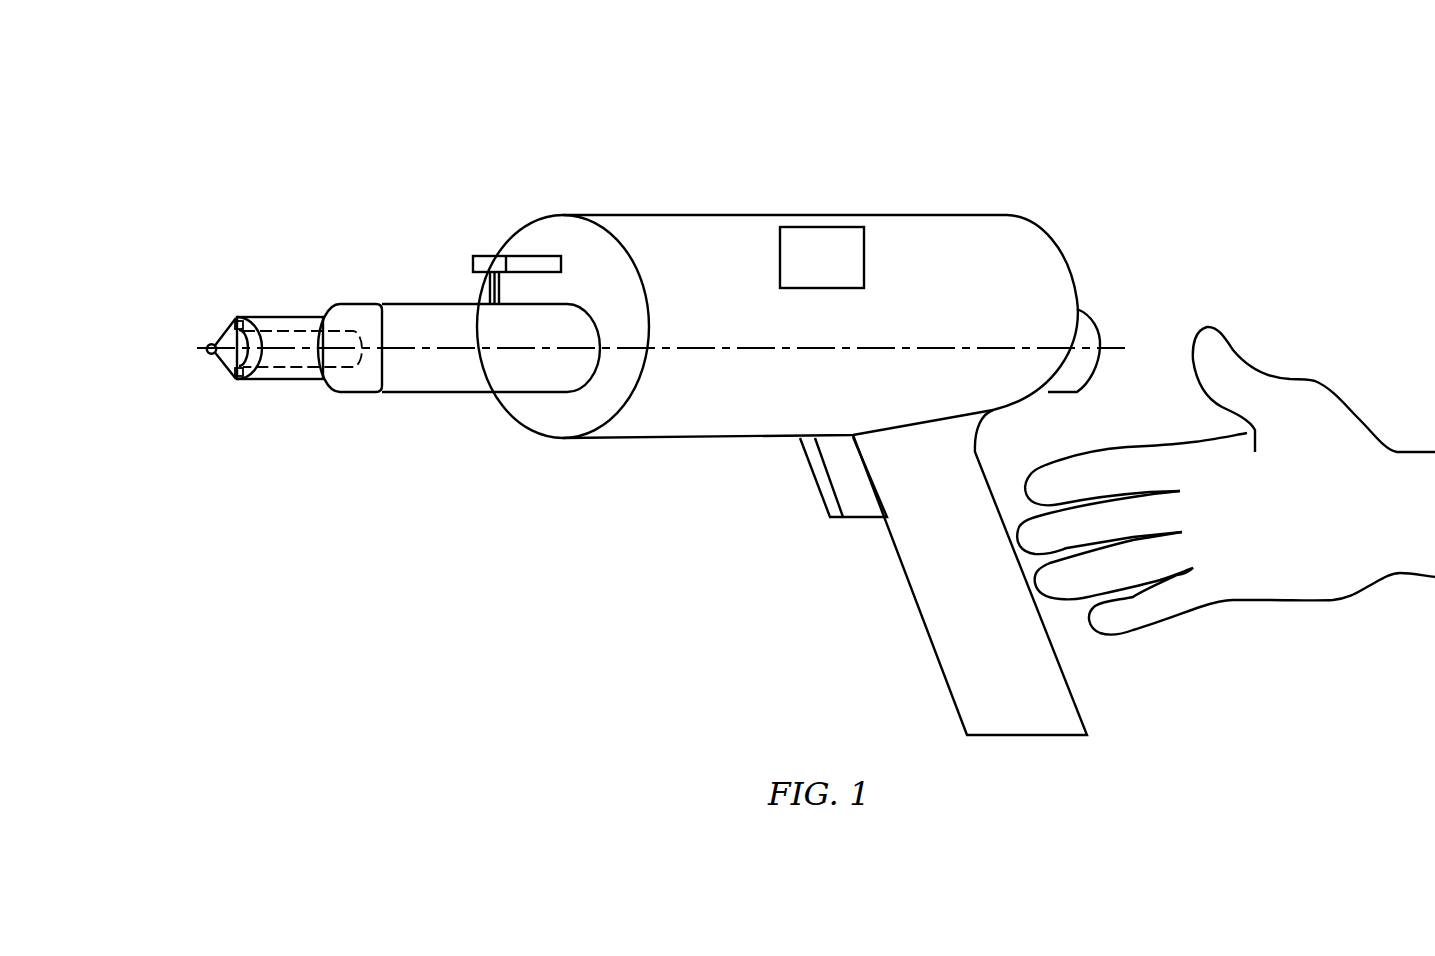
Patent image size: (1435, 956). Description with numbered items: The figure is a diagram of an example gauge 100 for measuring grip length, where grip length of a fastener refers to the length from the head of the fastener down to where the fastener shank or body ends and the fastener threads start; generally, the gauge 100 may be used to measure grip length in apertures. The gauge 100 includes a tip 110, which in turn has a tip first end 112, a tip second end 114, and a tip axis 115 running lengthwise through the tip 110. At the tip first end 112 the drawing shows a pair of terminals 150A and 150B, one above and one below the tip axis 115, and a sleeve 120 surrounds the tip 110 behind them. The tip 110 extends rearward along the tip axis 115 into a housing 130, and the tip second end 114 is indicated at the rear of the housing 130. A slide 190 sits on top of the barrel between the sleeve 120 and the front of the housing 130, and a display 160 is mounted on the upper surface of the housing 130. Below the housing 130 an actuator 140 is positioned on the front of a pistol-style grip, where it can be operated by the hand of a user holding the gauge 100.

The gauge 100 is at (170, 152).
The tip 110 is at (258, 317).
The tip first end 112 is at (210, 366).
The tip second end 114 is at (1120, 311).
The tip axis 115 is at (290, 350).
The sleeve 120 is at (273, 379).
The housing 130 is at (631, 210).
The actuator 140 is at (823, 480).
The terminal 150A is at (234, 321).
The terminal 150B is at (235, 377).
The display 160 is at (845, 227).
The slide 190 is at (517, 256).